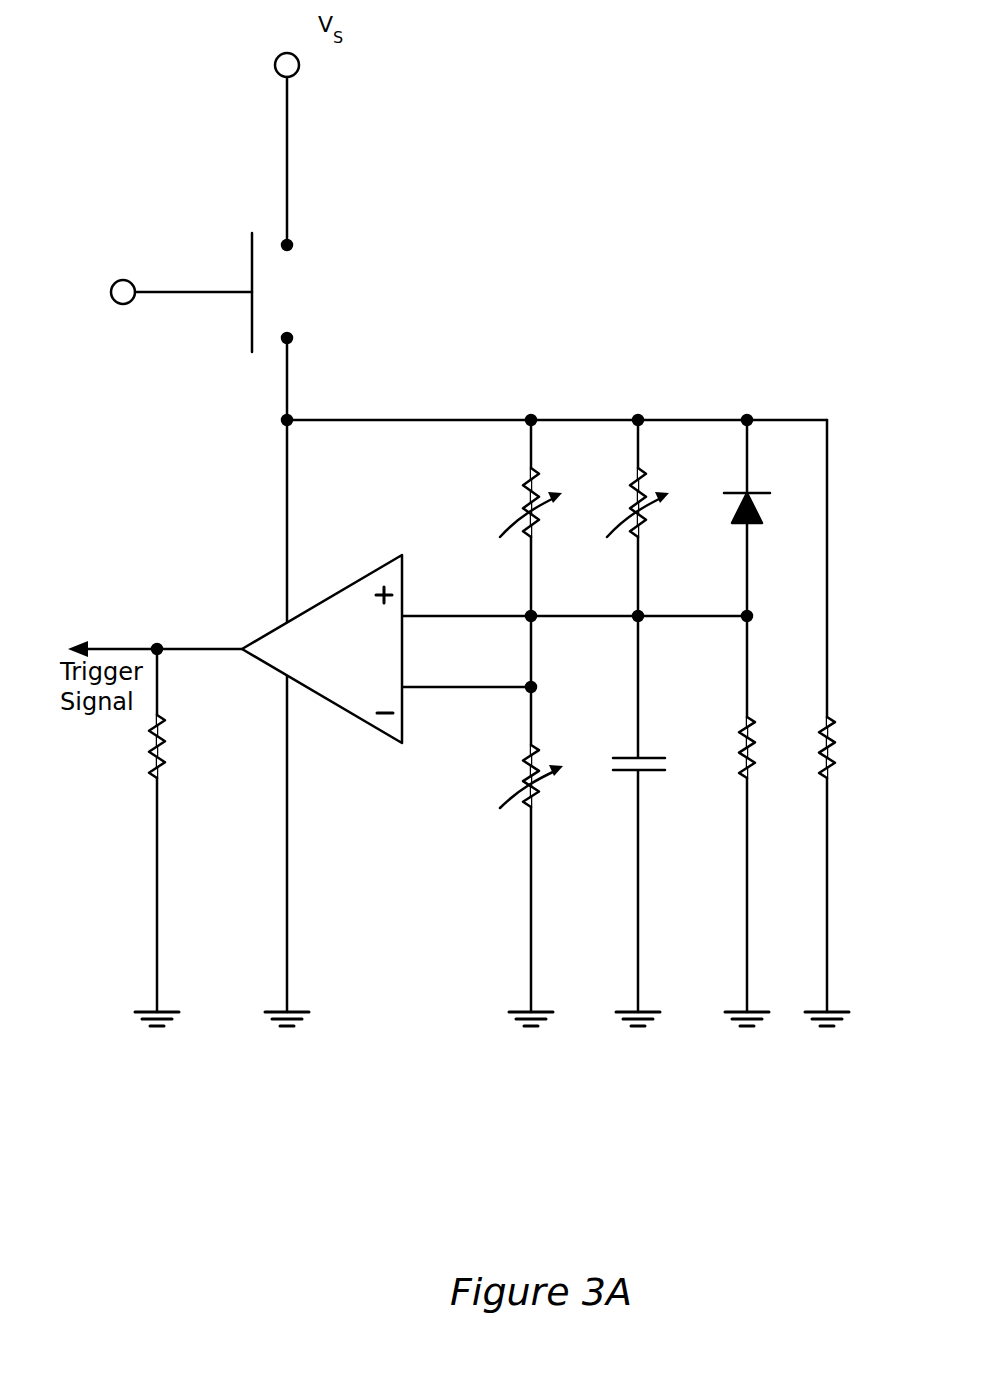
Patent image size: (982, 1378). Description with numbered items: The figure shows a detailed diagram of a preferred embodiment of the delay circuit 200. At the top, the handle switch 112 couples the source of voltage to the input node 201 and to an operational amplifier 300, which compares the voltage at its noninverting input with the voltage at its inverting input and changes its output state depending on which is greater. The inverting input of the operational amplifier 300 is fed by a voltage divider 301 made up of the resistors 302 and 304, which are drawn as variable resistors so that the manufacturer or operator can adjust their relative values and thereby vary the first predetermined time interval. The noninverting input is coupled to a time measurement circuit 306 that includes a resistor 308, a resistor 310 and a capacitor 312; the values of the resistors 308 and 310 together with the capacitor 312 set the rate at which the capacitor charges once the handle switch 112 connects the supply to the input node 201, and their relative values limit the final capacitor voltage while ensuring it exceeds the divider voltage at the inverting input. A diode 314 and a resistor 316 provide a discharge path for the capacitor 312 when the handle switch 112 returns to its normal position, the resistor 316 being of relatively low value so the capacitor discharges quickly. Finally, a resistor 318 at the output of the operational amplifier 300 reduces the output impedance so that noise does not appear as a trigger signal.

The handle switch 112 is at (232, 292).
The input node 201 is at (290, 338).
The delay circuit 200 is at (620, 258).
The time measurement circuit 306 is at (692, 380).
The resistor 302 is at (523, 475).
The resistor 308 is at (652, 492).
The diode 314 is at (772, 492).
The resistor 304 is at (535, 755).
The capacitor 312 is at (652, 758).
The resistor 310 is at (750, 730).
The resistor 316 is at (830, 765).
The operational amplifier 300 is at (378, 733).
The voltage divider 301 is at (458, 752).
The resistor 318 is at (148, 745).